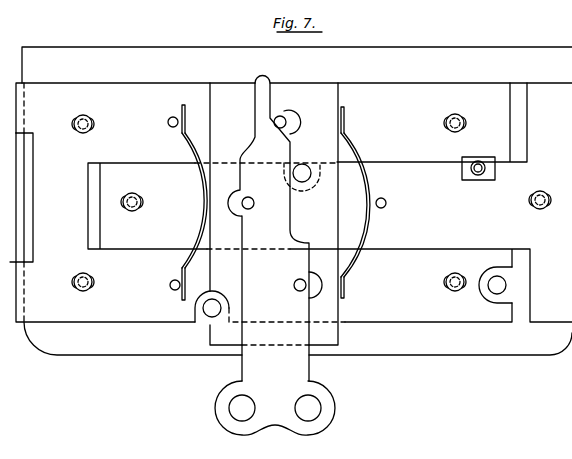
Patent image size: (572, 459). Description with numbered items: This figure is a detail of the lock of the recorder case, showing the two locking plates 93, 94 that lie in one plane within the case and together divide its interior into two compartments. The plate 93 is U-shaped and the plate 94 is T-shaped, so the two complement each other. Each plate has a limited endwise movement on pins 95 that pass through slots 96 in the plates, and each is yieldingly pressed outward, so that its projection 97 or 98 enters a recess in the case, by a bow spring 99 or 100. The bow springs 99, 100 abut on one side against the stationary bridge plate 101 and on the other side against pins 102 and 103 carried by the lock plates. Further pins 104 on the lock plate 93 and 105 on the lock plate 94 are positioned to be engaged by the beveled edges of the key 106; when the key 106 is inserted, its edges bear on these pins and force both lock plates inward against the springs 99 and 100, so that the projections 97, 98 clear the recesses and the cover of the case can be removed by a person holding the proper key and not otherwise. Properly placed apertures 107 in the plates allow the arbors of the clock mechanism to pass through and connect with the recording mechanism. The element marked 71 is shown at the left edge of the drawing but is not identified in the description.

The side bracket 71 is at (22, 128).
The locking plate 93 is at (147, 198).
The locking plate 94 is at (478, 186).
The pins 95 is at (88, 116).
The slots 96 is at (100, 126).
The projection 97 is at (458, 116).
The projection 98 is at (291, 214).
The bow spring 99 is at (203, 178).
The bow spring 100 is at (373, 177).
The stationary bridge plate 101 is at (271, 229).
The pin 102 is at (174, 128).
The pin 103 is at (387, 203).
The pin 104 is at (284, 120).
The pin 105 is at (245, 209).
The key 106 is at (242, 368).
The apertures 107 is at (303, 166).